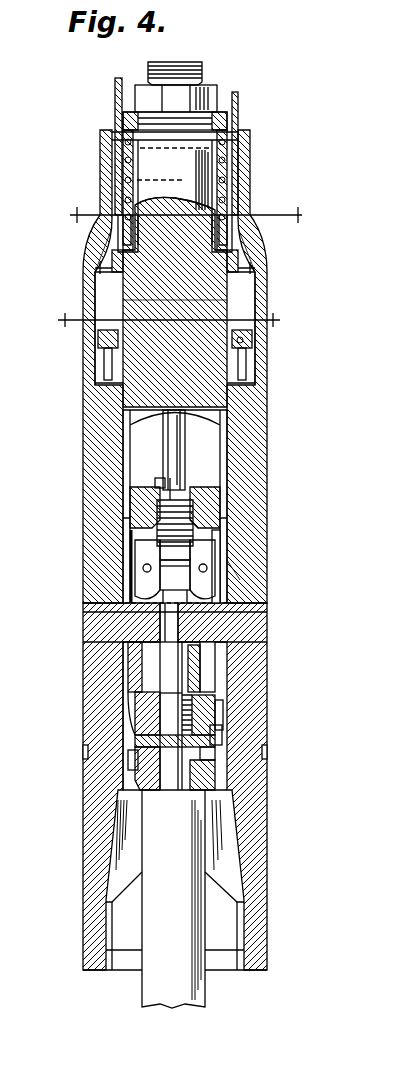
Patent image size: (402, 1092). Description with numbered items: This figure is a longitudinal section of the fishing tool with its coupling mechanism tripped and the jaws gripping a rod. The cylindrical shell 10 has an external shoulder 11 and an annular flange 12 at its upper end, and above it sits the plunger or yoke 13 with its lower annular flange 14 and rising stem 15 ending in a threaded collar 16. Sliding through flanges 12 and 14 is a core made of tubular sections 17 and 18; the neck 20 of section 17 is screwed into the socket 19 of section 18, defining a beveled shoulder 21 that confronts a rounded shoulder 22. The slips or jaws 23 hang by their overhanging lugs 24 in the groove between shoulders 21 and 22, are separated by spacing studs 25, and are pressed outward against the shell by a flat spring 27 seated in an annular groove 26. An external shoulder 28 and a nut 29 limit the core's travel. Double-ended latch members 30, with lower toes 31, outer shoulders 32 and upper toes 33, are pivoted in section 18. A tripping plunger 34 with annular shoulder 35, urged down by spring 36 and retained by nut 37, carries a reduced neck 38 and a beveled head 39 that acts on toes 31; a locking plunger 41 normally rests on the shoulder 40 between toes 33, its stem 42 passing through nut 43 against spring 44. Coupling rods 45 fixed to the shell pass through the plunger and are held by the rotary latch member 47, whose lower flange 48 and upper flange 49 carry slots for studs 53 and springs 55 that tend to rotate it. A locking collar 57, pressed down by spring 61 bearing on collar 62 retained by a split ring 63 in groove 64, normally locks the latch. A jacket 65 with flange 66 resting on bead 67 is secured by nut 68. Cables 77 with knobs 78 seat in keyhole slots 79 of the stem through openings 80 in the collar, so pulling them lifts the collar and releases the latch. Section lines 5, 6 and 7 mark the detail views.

The section line 5- 5 is at (187, 215).
The section line 6- 6 is at (170, 320).
The section line 7- 7 is at (175, 265).
The cylindrical sleeve or shell 10 is at (255, 818).
The external shoulder 11 is at (262, 770).
The annular flange 12 is at (230, 660).
The cylindrical plunger or yoke 13 is at (250, 492).
The annular flange 14 is at (240, 578).
The cylindrical stem 15 is at (200, 303).
The threaded collar 16 is at (205, 100).
The core section 17 is at (140, 744).
The core section 18 is at (200, 622).
The socket 19 is at (135, 657).
The reduced neck 20 is at (160, 668).
The beveled annular shoulder 21 is at (215, 736).
The rounded shoulder 22 is at (215, 690).
The slips or jaws 23 is at (215, 855).
The overhanging lugs 24 is at (205, 705).
The spacing studs 25 is at (150, 728).
The annular groove 26 is at (210, 782).
The flat spring 27 is at (133, 760).
The external annular shoulder 28 is at (215, 675).
The nut 29 is at (215, 517).
The double-ended latch members 30 is at (143, 572).
The toes 31 is at (165, 615).
The shoulders 32 is at (160, 610).
The toes 33 is at (200, 545).
The tripping plunger 34 is at (170, 693).
The annular shoulder 35 is at (135, 772).
The spring 36 is at (215, 716).
The nut 37 is at (160, 800).
The reduced stem or neck 38 is at (250, 604).
The cylindrical head 39 is at (160, 587).
The annular shoulder 40 is at (215, 563).
The locking plunger 41 is at (165, 548).
The stem 42 is at (190, 478).
The nut 43 is at (158, 485).
The spring 44 is at (135, 517).
The coupling rods 45 is at (182, 450).
The rotary latch member 47 is at (115, 298).
The flange 48 is at (238, 375).
The flange 49 is at (232, 262).
The studs 53 is at (103, 345).
The springs 55 is at (245, 345).
The locking collar 57 is at (238, 235).
The spring 61 is at (225, 170).
The collar 62 is at (240, 152).
The split resilient ring 63 is at (253, 135).
The groove 64 is at (185, 168).
The jacket 65 is at (258, 432).
The flange 66 is at (112, 132).
The bead 67 is at (199, 180).
The nut 68 is at (235, 122).
The cables or flexible elements 77 is at (115, 82).
The knobs 78 is at (150, 208).
The keyhole slots 79 is at (175, 302).
The openings 80 is at (118, 248).